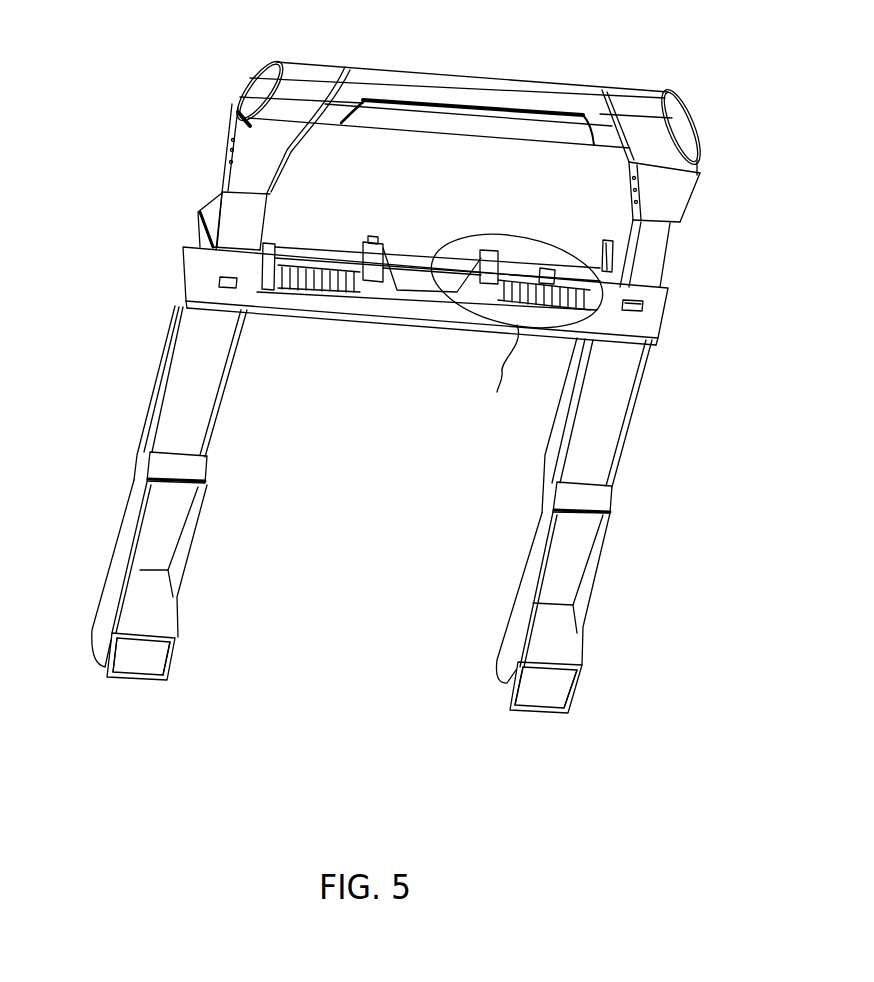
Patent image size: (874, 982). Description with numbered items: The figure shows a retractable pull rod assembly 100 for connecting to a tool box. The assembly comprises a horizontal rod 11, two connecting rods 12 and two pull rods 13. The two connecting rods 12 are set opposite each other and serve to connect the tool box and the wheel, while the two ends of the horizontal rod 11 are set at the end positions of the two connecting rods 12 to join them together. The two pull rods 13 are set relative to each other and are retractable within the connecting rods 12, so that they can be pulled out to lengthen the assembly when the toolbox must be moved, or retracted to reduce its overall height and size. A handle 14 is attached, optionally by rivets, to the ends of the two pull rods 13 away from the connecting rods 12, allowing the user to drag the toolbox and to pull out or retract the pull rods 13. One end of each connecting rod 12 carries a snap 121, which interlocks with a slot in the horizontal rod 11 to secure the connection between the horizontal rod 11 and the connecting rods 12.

The retractable pull rod assembly 100 is at (711, 129).
The handle 14 is at (487, 90).
The pull rod 13 is at (658, 249).
The horizontal rod 11 is at (648, 330).
The snap 121 is at (644, 301).
The connecting rod 12 is at (604, 499).